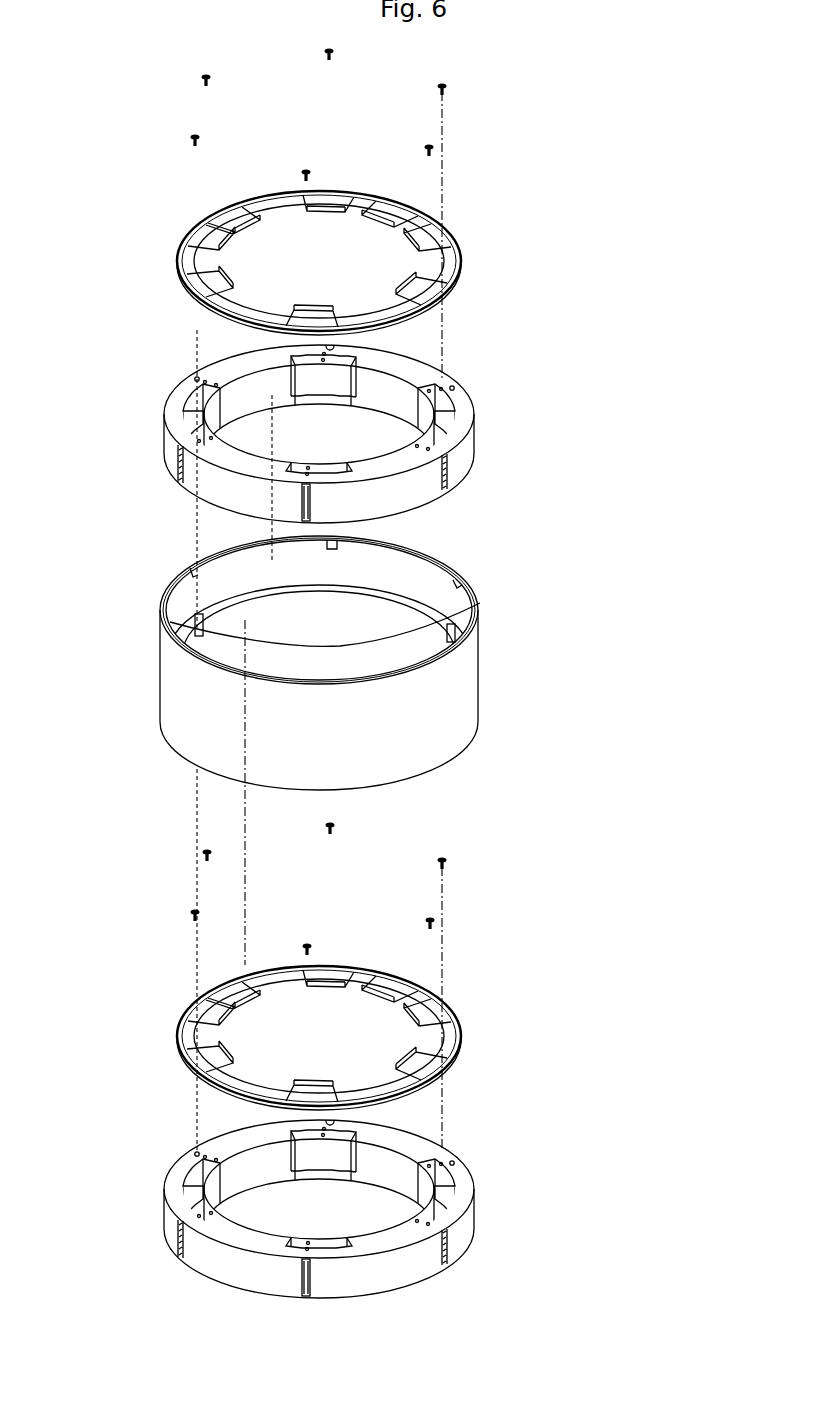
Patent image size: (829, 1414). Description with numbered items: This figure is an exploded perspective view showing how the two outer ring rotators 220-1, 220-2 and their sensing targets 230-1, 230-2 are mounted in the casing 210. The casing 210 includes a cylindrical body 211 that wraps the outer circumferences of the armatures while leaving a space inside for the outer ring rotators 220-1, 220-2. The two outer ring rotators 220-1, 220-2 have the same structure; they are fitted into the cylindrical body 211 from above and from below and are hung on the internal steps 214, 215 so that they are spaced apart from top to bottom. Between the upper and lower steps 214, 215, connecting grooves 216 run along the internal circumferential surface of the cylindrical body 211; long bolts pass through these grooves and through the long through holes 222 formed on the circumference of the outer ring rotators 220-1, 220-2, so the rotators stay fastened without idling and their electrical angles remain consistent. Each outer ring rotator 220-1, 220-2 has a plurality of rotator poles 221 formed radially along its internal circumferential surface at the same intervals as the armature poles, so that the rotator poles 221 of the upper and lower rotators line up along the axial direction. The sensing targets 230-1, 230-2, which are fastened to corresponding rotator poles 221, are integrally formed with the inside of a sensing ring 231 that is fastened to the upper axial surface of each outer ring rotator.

The casing 210 is at (412, 661).
The cylindrical body 211 is at (319, 700).
The upper step 214 is at (383, 580).
The lower step 215 is at (480, 603).
The connecting groove 216 is at (197, 614).
The outer ring rotator 220-1 is at (472, 443).
The outer ring rotator 220-2 is at (472, 1218).
The rotator pole 221 is at (337, 383).
The long through hole 222 is at (197, 378).
The sensing target 230-1 is at (345, 242).
The sensing target 230-2 is at (345, 1017).
The sensing ring 231 is at (458, 265).